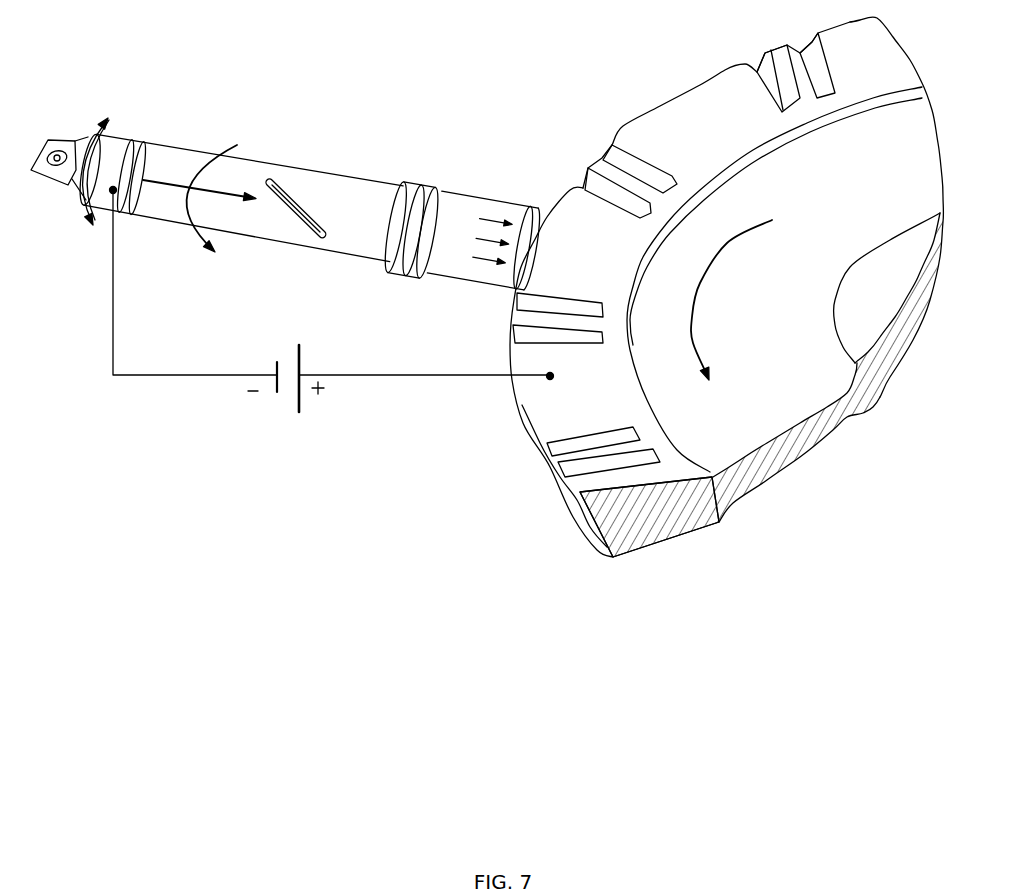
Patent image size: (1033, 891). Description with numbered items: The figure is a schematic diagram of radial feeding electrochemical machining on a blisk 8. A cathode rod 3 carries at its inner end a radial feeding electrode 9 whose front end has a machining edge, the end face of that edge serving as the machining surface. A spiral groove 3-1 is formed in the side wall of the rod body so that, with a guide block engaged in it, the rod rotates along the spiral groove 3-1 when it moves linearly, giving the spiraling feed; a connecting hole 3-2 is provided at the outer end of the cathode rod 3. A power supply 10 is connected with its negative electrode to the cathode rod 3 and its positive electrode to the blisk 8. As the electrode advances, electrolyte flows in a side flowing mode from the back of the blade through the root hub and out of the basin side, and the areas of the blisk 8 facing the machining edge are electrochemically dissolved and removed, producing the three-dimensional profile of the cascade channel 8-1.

The cathode rod 3 is at (163, 167).
The spiral groove 3-1 is at (295, 200).
The connecting hole 3-2 is at (63, 147).
The radial feeding electrode 9 is at (483, 217).
The blisk 8 is at (695, 107).
The cascade channel 8-1 is at (616, 173).
The power supply 10 is at (293, 408).